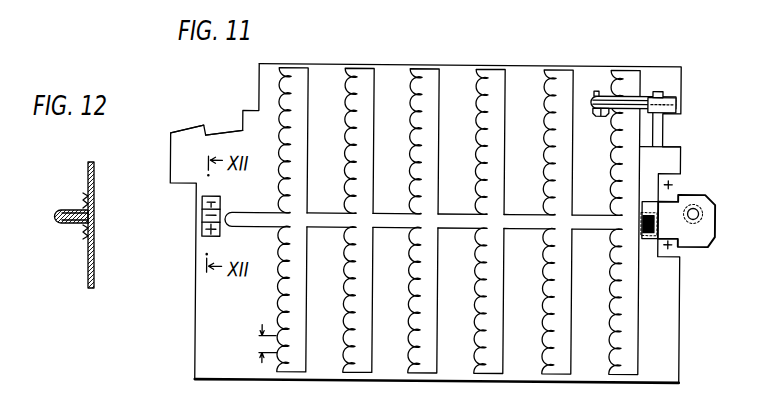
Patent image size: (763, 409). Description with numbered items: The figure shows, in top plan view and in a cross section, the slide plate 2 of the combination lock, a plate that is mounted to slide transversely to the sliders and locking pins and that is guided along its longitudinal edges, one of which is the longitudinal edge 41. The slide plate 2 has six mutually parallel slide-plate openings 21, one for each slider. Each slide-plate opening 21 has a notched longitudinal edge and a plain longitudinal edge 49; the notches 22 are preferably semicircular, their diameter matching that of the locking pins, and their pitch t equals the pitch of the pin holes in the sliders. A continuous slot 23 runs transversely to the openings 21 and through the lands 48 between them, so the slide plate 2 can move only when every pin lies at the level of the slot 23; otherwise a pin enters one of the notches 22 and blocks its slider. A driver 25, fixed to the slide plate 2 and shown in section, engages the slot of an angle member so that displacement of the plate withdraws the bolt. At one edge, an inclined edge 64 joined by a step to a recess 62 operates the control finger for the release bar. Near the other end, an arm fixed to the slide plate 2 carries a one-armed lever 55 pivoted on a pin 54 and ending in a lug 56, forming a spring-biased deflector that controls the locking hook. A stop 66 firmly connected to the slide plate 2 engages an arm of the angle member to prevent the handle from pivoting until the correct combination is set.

In FIG. 11, the slide plate 2 is at (191, 362).
In FIG. 12, the slide plate 2 is at (88, 277).
In FIG. 11, the slide-plate opening 21 is at (623, 68).
In FIG. 11, the notches 22 is at (287, 318).
In FIG. 11, the continuous slot 23 is at (393, 212).
In FIG. 11, the driver 25 is at (203, 218).
In FIG. 12, the driver 25 is at (62, 225).
In FIG. 11, the longitudinal edge 41 is at (330, 383).
In FIG. 11, the lands 48 is at (525, 80).
In FIG. 11, the plain longitudinal edge 49 is at (373, 140).
In FIG. 11, the pin 54 is at (598, 115).
In FIG. 11, the one-armed lever 55 is at (642, 97).
In FIG. 11, the lug 56 is at (673, 99).
In FIG. 11, the recess 62 is at (227, 132).
In FIG. 11, the edge 64 is at (192, 129).
In FIG. 11, the stop 66 is at (648, 217).
In FIG. 11, the pitch of the notches t is at (261, 343).